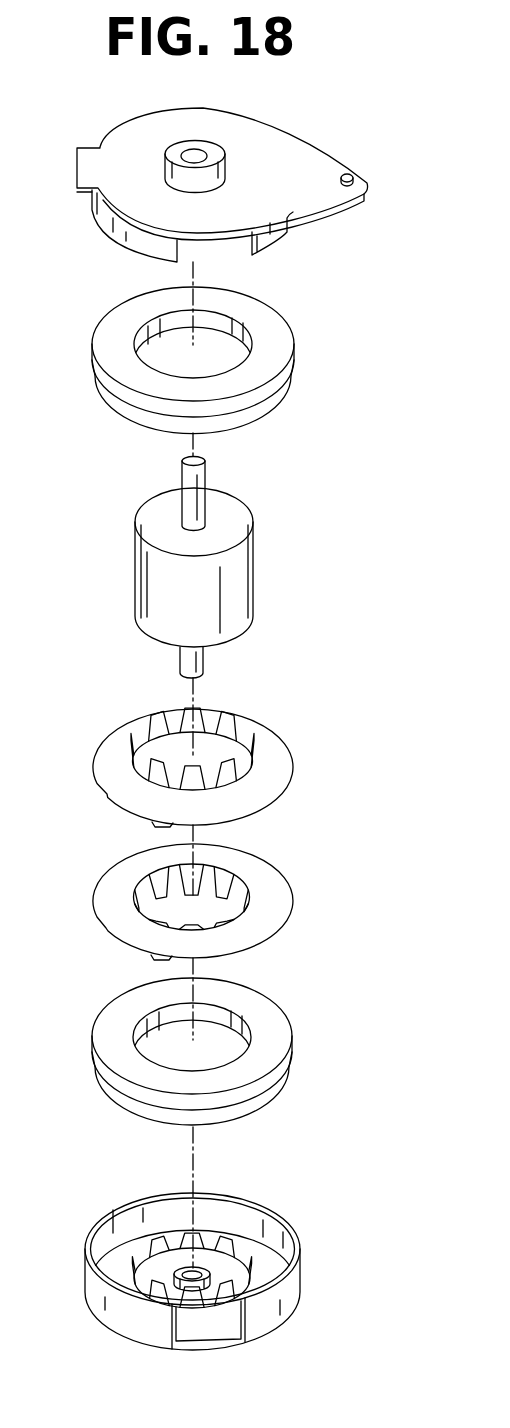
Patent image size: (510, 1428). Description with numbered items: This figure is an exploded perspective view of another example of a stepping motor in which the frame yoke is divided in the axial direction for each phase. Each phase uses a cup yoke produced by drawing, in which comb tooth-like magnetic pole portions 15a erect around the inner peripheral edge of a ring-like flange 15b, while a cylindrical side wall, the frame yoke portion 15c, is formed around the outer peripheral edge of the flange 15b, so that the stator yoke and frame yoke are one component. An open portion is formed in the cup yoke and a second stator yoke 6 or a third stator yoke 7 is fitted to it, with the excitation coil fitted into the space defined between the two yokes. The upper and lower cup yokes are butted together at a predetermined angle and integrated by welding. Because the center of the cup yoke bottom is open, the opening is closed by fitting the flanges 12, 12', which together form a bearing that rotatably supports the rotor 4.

The flange 12 is at (222, 168).
The rotor 4 is at (260, 573).
The second stator yoke 6 is at (290, 738).
The third stator yoke 7 is at (289, 865).
The comb tooth-like magnetic pole portions 15a is at (193, 1268).
The ring-like flange 15b is at (142, 1243).
The frame yoke portion 15c is at (110, 1228).
The flange 12' is at (291, 1257).